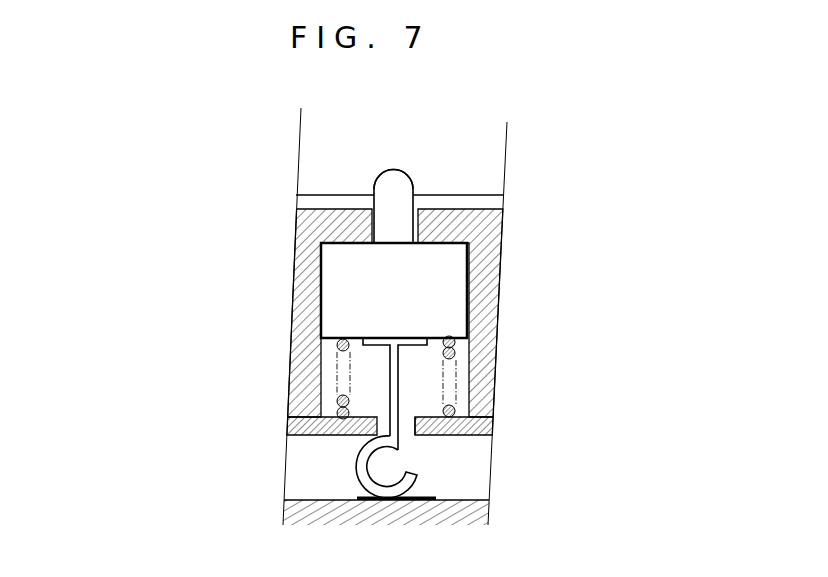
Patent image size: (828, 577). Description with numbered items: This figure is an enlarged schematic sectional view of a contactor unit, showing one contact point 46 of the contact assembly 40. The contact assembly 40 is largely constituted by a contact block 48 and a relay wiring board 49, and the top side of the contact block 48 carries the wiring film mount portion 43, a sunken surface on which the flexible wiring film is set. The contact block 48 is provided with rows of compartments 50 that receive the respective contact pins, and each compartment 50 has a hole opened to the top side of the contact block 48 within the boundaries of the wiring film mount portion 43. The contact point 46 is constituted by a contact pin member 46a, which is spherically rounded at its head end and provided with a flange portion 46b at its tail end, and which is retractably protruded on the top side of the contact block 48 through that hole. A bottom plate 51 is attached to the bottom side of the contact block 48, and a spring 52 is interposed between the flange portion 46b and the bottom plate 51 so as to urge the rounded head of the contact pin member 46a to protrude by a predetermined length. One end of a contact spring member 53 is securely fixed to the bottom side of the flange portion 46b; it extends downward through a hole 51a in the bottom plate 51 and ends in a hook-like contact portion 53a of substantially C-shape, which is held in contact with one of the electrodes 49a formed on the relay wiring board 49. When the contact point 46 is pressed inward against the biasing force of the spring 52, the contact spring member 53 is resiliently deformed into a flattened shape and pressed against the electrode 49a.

The contact assembly 40 is at (512, 242).
The wiring film mount portion 43 is at (317, 203).
The contact point 46 is at (372, 183).
The contact pin member 46a is at (397, 172).
The flange portion 46b is at (352, 288).
The contact block 48 is at (490, 288).
The relay wiring board 49 is at (295, 507).
The electrode 49a is at (433, 497).
The compartment 50 is at (330, 353).
The bottom plate 51 is at (290, 427).
The hole 51a is at (408, 431).
The spring 52 is at (456, 348).
The contact spring member 53 is at (400, 375).
The contact portion 53a is at (356, 467).